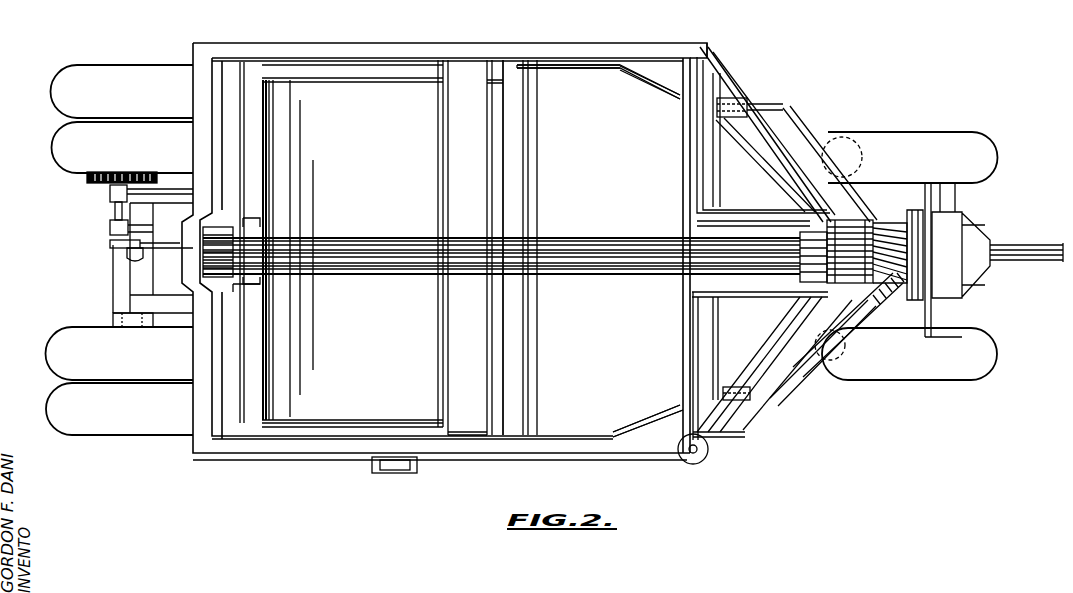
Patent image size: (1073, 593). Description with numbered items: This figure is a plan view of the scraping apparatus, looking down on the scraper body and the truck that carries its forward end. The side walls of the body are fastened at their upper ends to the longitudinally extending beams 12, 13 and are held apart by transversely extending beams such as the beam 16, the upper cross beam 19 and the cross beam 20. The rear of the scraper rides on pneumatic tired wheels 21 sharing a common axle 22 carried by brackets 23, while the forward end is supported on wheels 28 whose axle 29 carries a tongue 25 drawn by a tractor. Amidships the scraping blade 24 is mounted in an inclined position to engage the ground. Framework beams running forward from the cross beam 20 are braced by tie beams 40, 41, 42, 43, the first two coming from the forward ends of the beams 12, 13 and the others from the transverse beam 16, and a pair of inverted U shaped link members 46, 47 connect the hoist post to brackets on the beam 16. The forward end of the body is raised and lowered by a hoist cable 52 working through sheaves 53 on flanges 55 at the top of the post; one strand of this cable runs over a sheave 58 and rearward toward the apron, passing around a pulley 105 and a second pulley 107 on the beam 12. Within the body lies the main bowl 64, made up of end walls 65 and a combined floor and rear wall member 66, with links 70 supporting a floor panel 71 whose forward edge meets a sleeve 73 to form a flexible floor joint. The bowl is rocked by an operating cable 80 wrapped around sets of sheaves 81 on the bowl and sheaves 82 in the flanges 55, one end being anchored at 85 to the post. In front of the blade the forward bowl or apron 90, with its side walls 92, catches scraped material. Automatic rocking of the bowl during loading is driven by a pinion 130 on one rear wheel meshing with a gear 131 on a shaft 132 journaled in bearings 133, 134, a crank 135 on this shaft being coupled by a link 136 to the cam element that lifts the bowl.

The longitudinally extending beam 12 is at (568, 455).
The longitudinally extending beam 13 is at (670, 52).
The transversely extending beam 16 is at (718, 325).
The transversely extending beam 19 is at (245, 290).
The transversely extending beam 20 is at (690, 152).
The pneumatic tired wheels 21 is at (62, 163).
The common axle 22 is at (112, 320).
The brackets 23 is at (113, 284).
The scraping blade 24 is at (556, 62).
The tongue 25 is at (1045, 243).
The pneumatic tired wheels 28 is at (980, 140).
The axle 29 is at (955, 187).
The tie beam 40 is at (742, 92).
The tie beam 41 is at (775, 397).
The tie beam 42 is at (778, 183).
The tie beam 43 is at (754, 333).
The inverted U shaped link member 46 is at (800, 380).
The inverted U shaped link member 47 is at (830, 145).
The hoist cable 52 is at (748, 430).
The sheaves 53 is at (872, 225).
The flanges 55 is at (862, 222).
The sheave 58 is at (925, 312).
The main bowl 64 is at (352, 410).
The end walls 65 is at (348, 82).
The combined floor and rear wall member 66 is at (266, 80).
The links 70 is at (440, 90).
The floor panel 71 is at (468, 440).
The sleeve 73 is at (505, 120).
The operating cable 80 is at (657, 240).
The sheaves 81 is at (238, 238).
The sheaves 82 is at (835, 235).
The cable anchorage 85 is at (830, 335).
The forward bowl or apron 90 is at (603, 425).
The side walls 92 is at (640, 70).
The pulley 105 is at (404, 473).
The pulley 107 is at (693, 465).
The pinion 130 is at (150, 172).
The gear 131 is at (112, 172).
The shaft 132 is at (113, 209).
The bearing 133 is at (108, 190).
The bearing 134 is at (108, 227).
The crank 135 is at (108, 245).
The link 136 is at (127, 262).